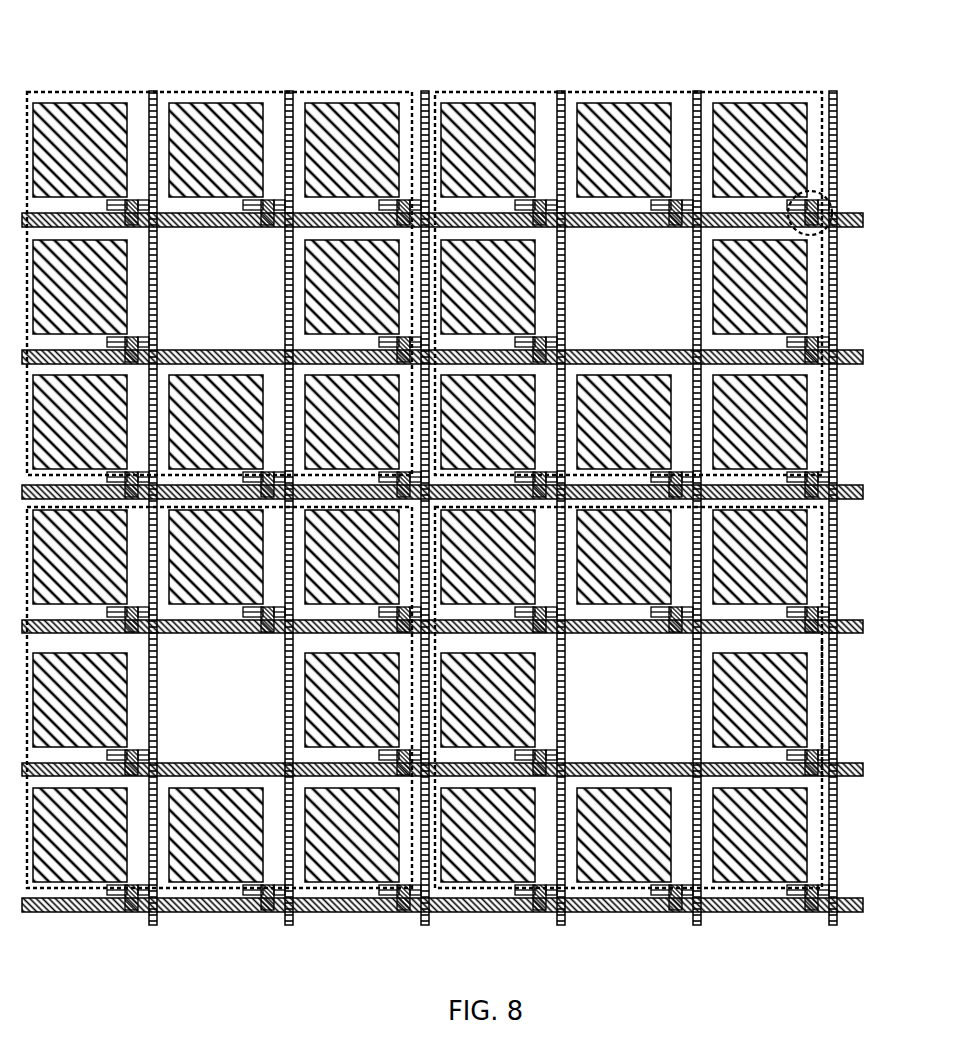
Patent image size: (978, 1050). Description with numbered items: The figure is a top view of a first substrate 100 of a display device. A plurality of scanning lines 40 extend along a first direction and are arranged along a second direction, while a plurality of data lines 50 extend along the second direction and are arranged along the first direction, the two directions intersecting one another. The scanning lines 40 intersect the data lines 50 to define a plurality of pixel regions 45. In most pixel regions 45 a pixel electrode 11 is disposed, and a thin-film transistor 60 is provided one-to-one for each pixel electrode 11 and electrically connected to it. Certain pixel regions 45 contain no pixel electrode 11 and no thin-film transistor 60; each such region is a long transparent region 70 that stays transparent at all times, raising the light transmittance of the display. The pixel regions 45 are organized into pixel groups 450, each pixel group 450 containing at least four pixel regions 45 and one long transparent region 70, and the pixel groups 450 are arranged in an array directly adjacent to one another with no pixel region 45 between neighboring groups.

The first substrate 100 is at (840, 37).
The pixel group 450 is at (78, 92).
The pixel electrode 11 is at (738, 108).
The data line 50 is at (835, 142).
The thin-film transistor 60 is at (821, 193).
The scanning line 40 is at (857, 352).
The long transparent region 70 is at (675, 703).
The pixel region 45 is at (820, 710).